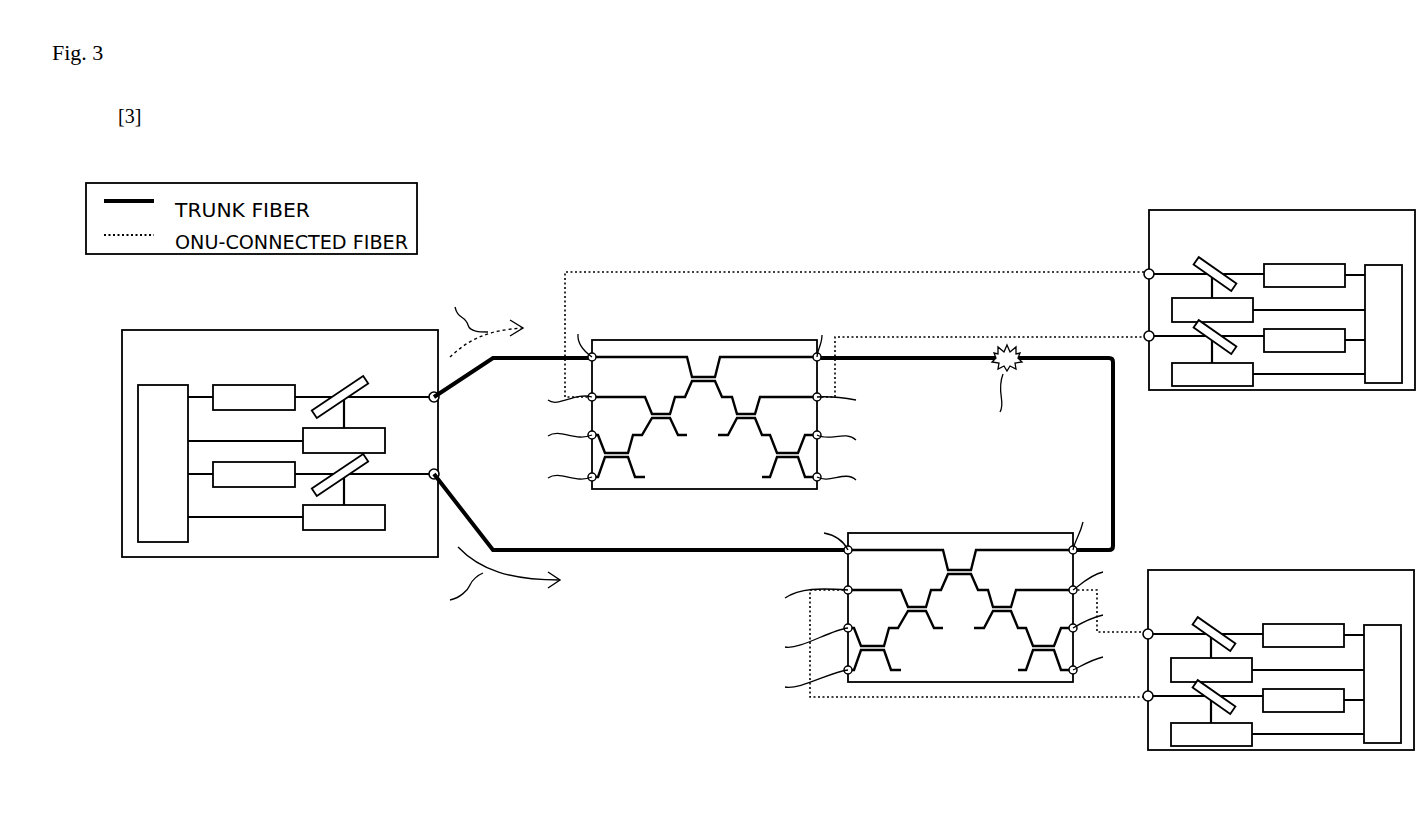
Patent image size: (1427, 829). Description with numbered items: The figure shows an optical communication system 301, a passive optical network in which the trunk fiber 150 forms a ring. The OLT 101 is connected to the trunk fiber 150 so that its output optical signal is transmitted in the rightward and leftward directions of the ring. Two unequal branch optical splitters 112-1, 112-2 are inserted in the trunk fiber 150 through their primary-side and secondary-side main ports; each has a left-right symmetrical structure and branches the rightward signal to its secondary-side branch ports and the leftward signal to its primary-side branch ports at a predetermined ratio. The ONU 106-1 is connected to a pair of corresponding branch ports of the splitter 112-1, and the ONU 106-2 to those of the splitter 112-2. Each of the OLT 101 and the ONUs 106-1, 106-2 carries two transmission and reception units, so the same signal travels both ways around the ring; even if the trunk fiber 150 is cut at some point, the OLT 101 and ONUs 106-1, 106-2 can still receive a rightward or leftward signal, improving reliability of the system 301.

The OLT 101 is at (265, 330).
The ONU 106-1 is at (1225, 210).
The ONU 106-2 is at (1225, 571).
The unequal branch optical splitter 112-1 is at (665, 340).
The unequal branch optical splitter 112-2 is at (921, 533).
The trunk fiber 150 is at (1113, 487).
The optical communication system 301 is at (843, 197).